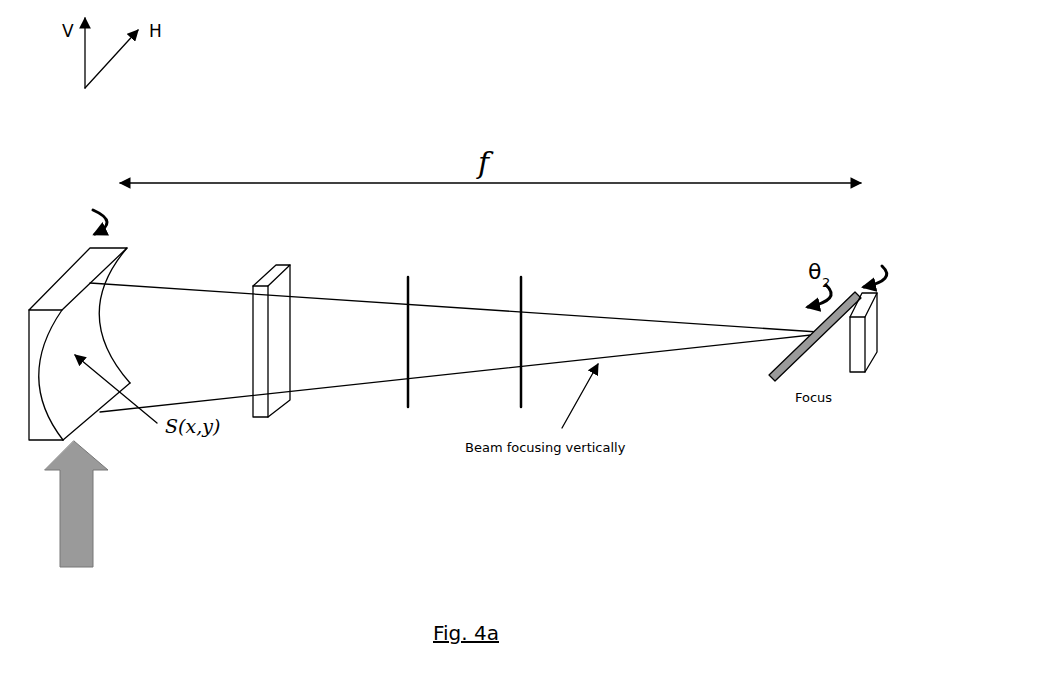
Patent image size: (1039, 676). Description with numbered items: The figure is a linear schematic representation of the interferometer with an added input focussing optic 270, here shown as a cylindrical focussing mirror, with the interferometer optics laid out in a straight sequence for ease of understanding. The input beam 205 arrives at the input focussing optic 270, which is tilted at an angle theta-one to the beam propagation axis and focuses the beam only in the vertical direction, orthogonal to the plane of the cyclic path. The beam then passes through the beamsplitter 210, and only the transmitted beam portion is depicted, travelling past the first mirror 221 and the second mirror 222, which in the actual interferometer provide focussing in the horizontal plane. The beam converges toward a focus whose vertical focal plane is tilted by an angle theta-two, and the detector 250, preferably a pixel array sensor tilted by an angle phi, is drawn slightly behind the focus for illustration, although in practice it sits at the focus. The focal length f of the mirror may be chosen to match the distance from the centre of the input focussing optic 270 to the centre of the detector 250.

The input beam 205 is at (114, 522).
The beamsplitter 210 is at (297, 313).
The first mirror 221 is at (403, 316).
The second mirror 222 is at (515, 316).
The detector 250 is at (877, 281).
The input focussing optic 270 is at (75, 293).